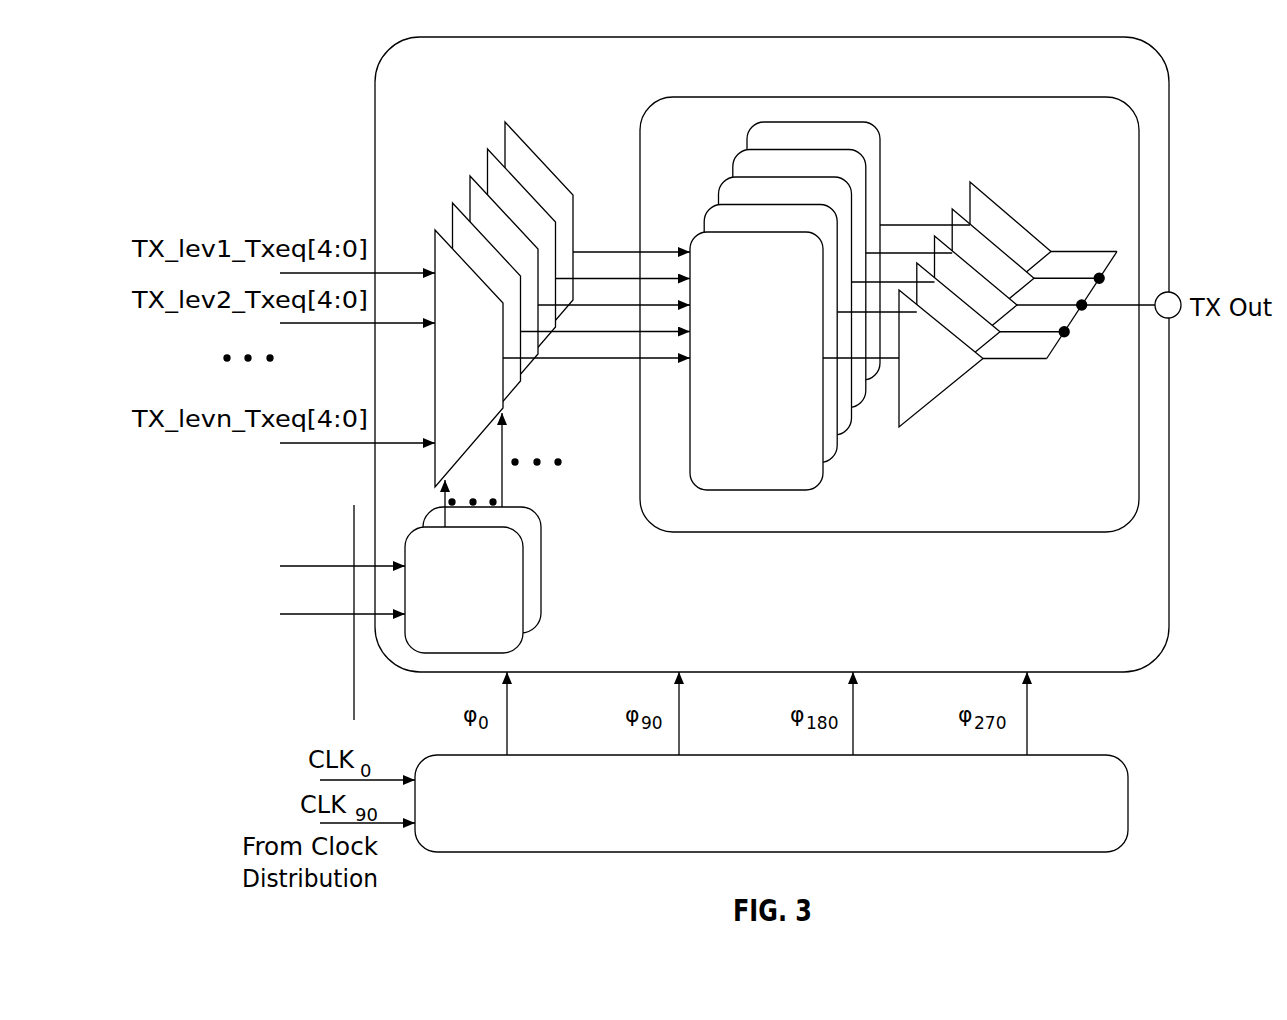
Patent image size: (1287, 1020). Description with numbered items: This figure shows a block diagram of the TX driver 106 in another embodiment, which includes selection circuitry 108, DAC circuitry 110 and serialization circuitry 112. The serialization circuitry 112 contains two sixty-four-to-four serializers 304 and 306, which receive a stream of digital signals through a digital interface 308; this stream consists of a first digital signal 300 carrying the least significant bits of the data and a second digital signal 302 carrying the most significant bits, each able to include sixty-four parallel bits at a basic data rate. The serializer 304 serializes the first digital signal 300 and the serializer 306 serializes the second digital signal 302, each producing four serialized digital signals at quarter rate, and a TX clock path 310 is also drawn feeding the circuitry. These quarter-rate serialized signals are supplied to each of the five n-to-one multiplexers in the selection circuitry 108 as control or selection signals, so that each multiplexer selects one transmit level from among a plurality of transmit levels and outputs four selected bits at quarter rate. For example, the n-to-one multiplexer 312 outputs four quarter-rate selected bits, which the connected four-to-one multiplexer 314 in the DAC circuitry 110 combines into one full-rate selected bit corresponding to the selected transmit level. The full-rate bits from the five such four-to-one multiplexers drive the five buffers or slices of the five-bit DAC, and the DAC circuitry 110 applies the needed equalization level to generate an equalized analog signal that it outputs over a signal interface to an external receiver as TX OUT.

The TX driver 106 is at (443, 33).
The selection circuitry 108 is at (562, 295).
The DAC circuitry 110 is at (722, 93).
The serialization circuitry 112 is at (535, 492).
The first digital signal 300 is at (230, 542).
The second digital signal 302 is at (222, 590).
The serializer 304 is at (541, 620).
The serializer 306 is at (543, 548).
The digital interface 308 is at (354, 690).
The TX clock path 310 is at (1062, 752).
The n:1 multiplexer 312 is at (503, 410).
The 4:1 multiplexer 314 is at (738, 389).